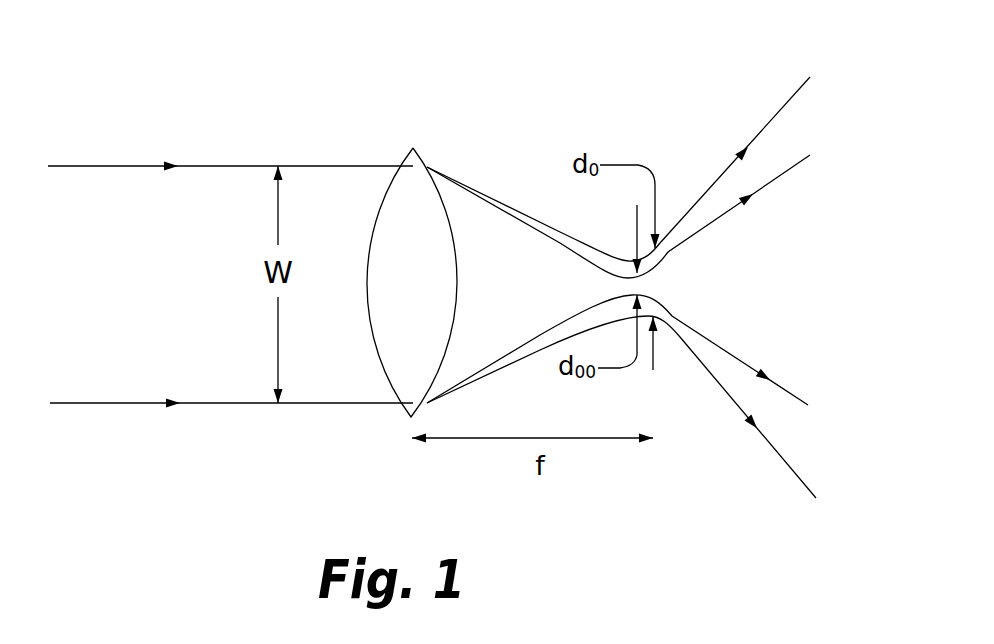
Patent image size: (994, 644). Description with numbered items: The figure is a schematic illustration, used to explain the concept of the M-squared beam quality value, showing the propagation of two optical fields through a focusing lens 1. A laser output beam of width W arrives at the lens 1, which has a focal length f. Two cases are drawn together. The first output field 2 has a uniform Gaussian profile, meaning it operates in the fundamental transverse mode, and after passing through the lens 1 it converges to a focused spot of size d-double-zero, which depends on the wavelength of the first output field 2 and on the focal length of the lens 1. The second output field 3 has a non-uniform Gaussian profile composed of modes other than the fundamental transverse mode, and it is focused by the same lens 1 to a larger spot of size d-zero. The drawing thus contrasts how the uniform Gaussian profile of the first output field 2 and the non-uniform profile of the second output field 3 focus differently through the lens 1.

The lens 1 is at (402, 198).
The first output field 2 is at (790, 170).
The second output field 3 is at (793, 473).